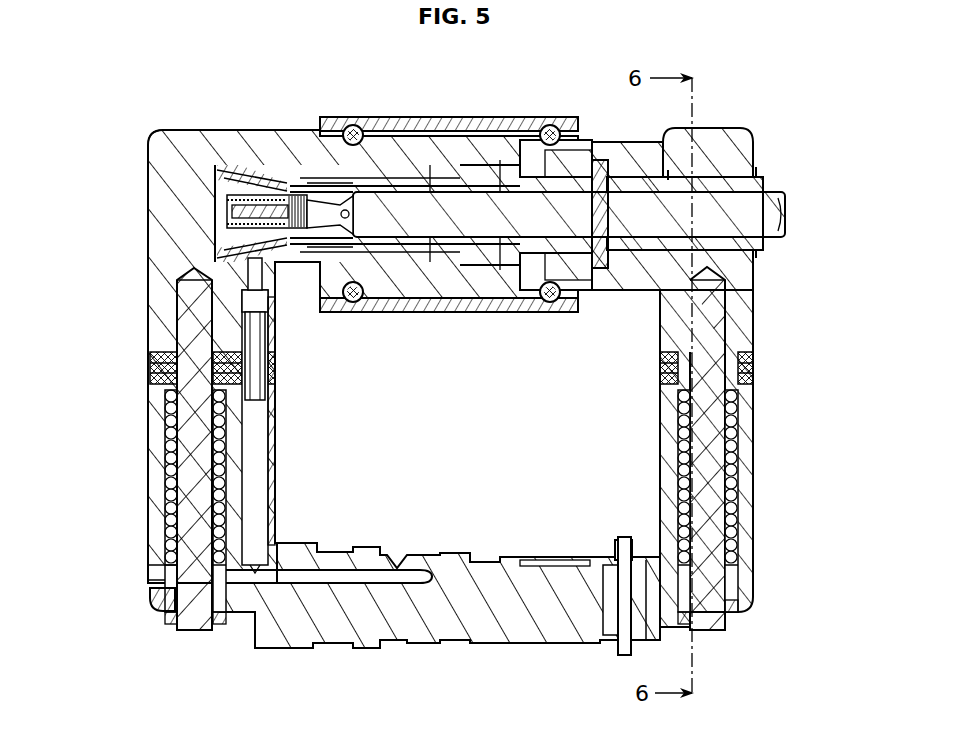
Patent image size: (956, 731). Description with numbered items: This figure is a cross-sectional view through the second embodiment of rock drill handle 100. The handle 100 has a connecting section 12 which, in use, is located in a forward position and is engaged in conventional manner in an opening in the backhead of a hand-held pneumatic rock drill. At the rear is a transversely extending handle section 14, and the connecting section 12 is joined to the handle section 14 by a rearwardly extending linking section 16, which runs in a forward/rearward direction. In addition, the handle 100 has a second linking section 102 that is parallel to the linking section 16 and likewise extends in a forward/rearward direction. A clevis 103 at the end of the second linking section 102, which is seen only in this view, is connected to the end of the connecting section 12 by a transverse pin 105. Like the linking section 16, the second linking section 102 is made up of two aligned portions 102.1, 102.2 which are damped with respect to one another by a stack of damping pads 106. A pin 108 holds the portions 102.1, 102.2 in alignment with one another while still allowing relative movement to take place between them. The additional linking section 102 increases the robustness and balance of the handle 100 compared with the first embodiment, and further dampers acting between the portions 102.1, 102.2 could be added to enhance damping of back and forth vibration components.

The connecting section 12 is at (383, 650).
The handle section 14 is at (376, 106).
The linking section 16 is at (140, 412).
The handle 100 is at (140, 546).
The second linking section 102 is at (778, 448).
The aligned portion 102.1 is at (755, 330).
The aligned portion 102.2 is at (752, 545).
The clevis 103 is at (612, 640).
The transverse pin 105 is at (612, 540).
The damping pads 106 is at (755, 355).
The pin 108 is at (712, 480).